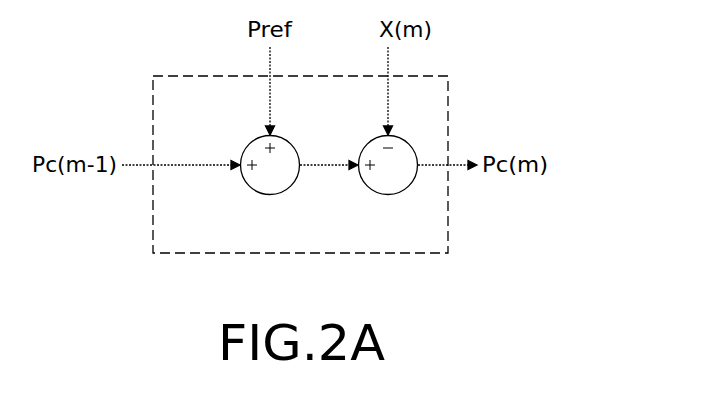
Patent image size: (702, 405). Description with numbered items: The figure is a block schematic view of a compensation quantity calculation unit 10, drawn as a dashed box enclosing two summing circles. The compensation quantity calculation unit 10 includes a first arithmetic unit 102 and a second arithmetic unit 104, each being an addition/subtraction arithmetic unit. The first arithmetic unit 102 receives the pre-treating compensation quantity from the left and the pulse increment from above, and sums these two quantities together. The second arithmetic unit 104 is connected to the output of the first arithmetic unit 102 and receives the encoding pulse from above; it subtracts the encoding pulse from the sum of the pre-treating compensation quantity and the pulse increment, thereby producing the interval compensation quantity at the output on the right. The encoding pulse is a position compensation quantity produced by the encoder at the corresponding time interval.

The compensation quantity calculation unit 10 is at (438, 94).
The first arithmetic unit 102 is at (272, 187).
The second arithmetic unit 104 is at (390, 187).